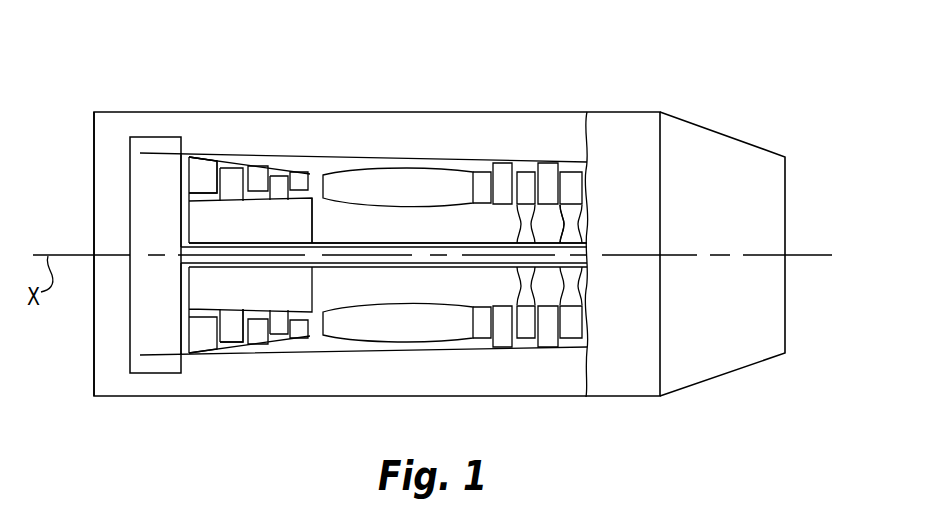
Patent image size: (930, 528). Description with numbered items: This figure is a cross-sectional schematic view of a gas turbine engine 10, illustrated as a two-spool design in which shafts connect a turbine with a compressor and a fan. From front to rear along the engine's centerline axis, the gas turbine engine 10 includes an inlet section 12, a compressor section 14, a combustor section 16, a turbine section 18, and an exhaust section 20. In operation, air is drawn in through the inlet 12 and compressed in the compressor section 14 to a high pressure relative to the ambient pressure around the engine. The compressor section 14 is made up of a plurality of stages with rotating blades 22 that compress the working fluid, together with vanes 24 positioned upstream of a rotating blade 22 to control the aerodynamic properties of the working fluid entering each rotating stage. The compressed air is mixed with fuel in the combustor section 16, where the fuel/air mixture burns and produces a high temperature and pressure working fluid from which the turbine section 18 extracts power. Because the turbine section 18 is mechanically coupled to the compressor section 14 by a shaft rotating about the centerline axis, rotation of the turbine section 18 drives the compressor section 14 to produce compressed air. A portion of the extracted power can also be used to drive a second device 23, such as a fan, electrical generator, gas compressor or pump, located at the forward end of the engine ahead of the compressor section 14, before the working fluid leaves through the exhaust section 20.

The gas turbine engine 10 is at (520, 84).
The inlet section 12 is at (94, 320).
The compressor section 14 is at (313, 410).
The combustor section 16 is at (400, 333).
The turbine section 18 is at (608, 410).
The exhaust section 20 is at (706, 379).
The rotating blades 22 is at (227, 340).
The second device 23 is at (152, 142).
The vanes 24 is at (204, 165).